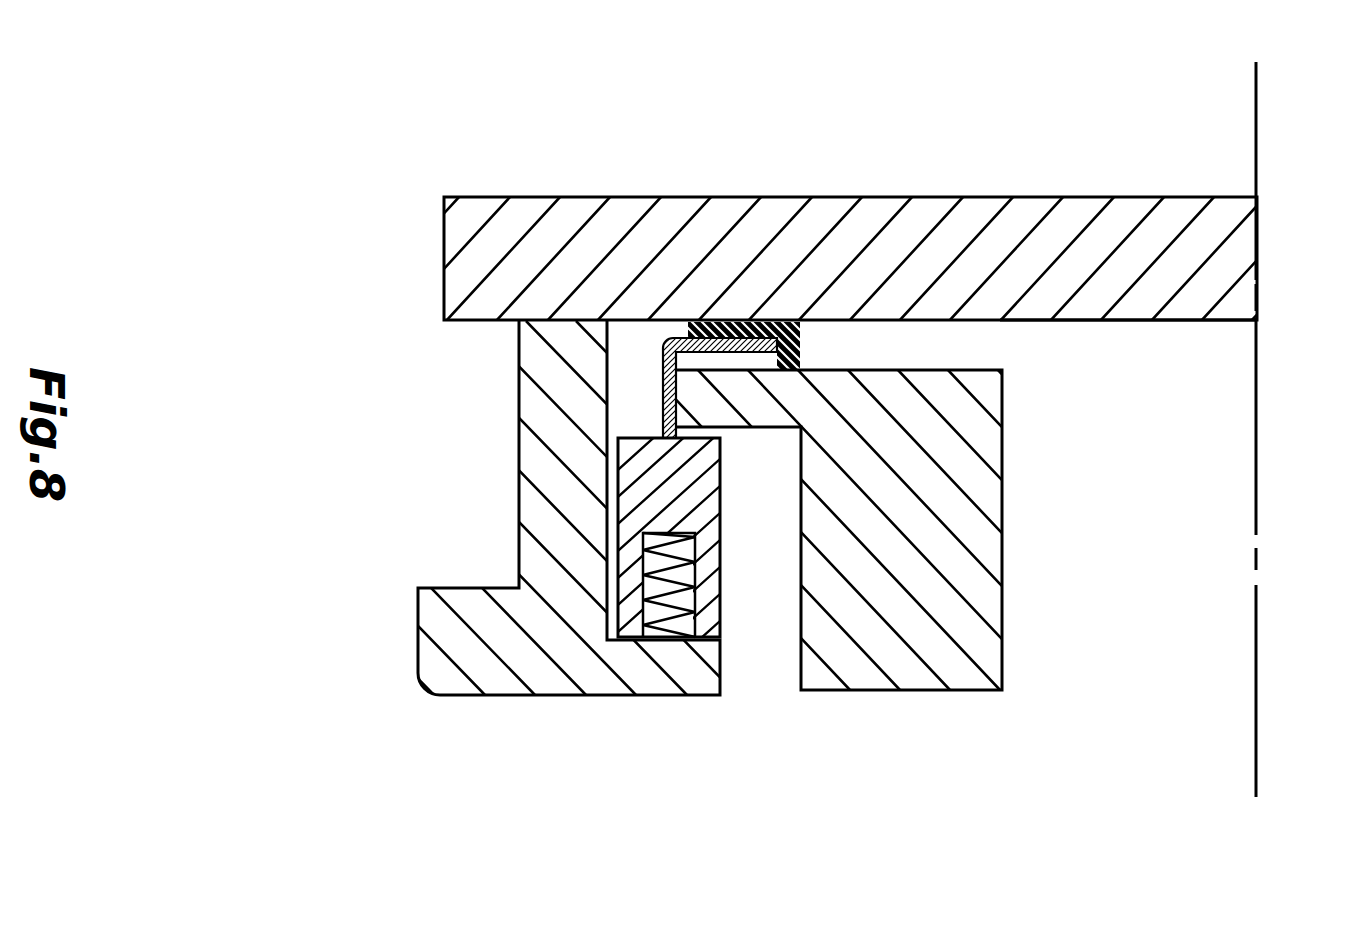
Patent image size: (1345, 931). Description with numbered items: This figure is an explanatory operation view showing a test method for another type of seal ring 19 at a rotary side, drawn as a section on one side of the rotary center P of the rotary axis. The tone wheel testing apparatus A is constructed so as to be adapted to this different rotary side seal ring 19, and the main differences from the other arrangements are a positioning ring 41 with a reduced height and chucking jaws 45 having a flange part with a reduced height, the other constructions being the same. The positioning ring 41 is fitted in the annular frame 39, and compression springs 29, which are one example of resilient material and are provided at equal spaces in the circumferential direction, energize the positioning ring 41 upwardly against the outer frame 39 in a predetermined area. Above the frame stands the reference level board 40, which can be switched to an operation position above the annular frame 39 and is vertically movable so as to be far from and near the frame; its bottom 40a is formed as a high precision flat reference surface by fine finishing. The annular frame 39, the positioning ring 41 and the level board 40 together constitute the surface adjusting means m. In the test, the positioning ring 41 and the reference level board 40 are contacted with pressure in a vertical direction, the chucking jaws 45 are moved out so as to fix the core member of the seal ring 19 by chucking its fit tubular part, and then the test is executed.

The reference level board 40 is at (838, 257).
The bottom of the reference level board 40a is at (1130, 336).
The seal ring at a rotary side 19 is at (655, 366).
The annular frame 39 is at (537, 567).
The positioning ring 41 is at (692, 495).
The compression springs 29 is at (667, 643).
The chucking jaws 45 is at (980, 587).
The surface adjusting means m is at (640, 157).
The tone wheel testing apparatus A is at (1270, 160).
The rotary center P is at (1256, 462).